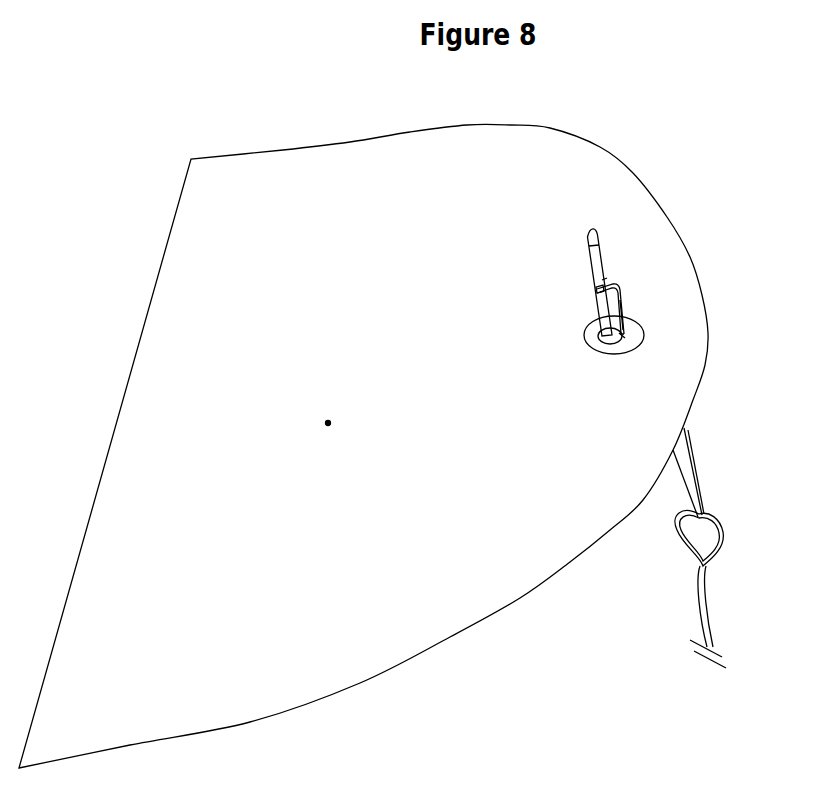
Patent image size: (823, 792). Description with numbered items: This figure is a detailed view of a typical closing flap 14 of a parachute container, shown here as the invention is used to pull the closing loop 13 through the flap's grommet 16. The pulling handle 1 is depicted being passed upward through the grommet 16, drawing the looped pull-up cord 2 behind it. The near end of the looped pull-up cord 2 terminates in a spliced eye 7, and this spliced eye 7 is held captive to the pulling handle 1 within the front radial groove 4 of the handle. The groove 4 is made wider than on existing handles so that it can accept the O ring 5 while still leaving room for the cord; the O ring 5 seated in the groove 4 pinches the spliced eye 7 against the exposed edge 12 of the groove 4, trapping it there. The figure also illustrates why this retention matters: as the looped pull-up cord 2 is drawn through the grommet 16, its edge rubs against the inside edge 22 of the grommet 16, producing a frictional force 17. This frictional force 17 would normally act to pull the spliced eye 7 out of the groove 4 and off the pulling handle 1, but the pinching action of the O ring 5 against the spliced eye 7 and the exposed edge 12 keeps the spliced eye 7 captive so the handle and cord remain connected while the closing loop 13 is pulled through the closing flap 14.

The pulling handle 1 is at (602, 250).
The exposed edge 12 is at (603, 279).
The front radial groove 4 is at (603, 288).
The O ring 5 is at (600, 290).
The spliced eye 7 is at (612, 282).
The looped pull-up cord 2 is at (623, 308).
The frictional force 17 is at (627, 337).
The inside edge of grommet 22 is at (620, 338).
The closing flap grommet 16 is at (605, 356).
The closing flap 14 is at (328, 423).
The closing loop 13 is at (720, 525).